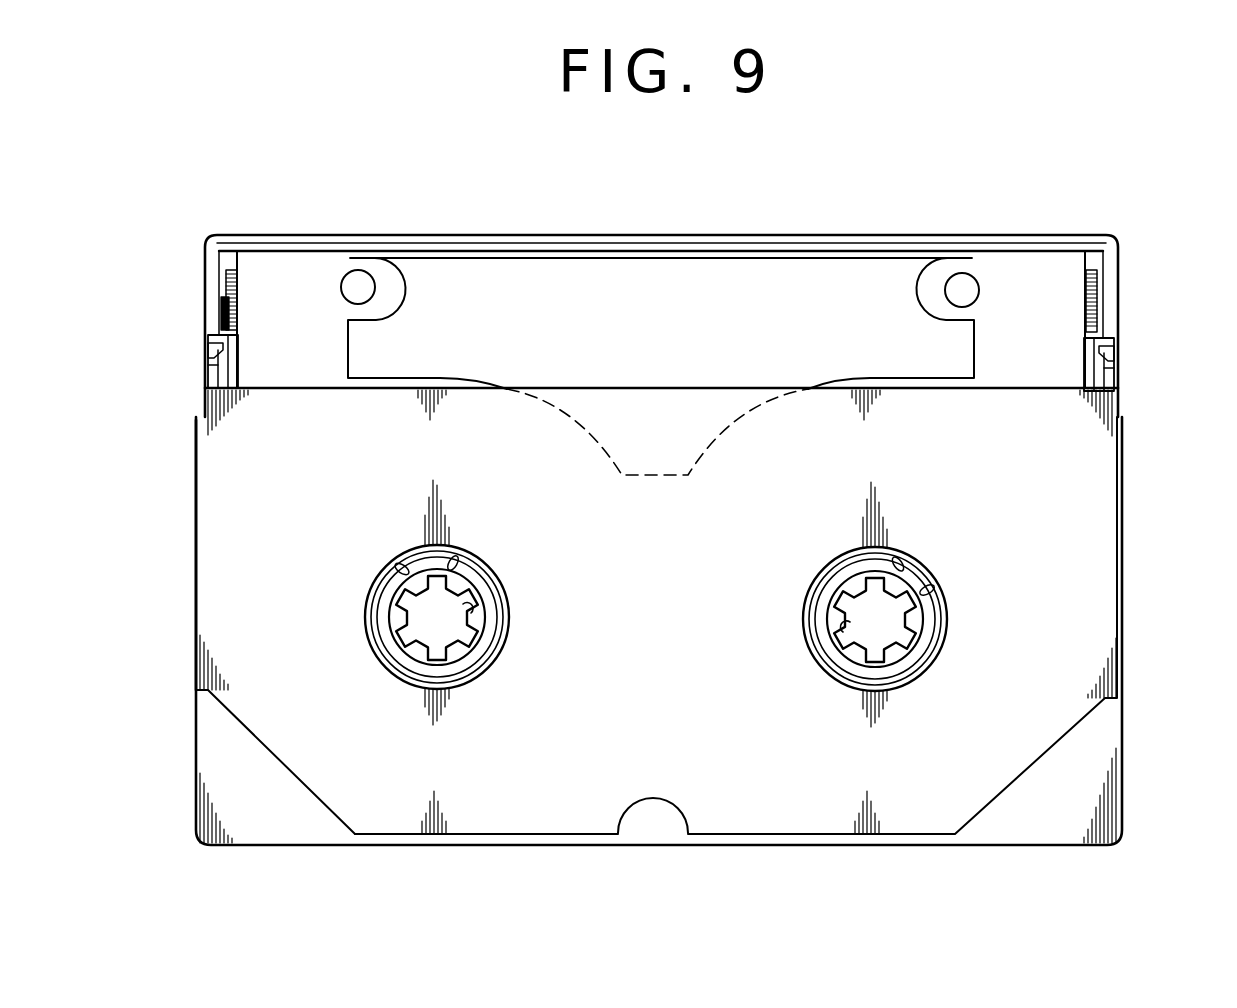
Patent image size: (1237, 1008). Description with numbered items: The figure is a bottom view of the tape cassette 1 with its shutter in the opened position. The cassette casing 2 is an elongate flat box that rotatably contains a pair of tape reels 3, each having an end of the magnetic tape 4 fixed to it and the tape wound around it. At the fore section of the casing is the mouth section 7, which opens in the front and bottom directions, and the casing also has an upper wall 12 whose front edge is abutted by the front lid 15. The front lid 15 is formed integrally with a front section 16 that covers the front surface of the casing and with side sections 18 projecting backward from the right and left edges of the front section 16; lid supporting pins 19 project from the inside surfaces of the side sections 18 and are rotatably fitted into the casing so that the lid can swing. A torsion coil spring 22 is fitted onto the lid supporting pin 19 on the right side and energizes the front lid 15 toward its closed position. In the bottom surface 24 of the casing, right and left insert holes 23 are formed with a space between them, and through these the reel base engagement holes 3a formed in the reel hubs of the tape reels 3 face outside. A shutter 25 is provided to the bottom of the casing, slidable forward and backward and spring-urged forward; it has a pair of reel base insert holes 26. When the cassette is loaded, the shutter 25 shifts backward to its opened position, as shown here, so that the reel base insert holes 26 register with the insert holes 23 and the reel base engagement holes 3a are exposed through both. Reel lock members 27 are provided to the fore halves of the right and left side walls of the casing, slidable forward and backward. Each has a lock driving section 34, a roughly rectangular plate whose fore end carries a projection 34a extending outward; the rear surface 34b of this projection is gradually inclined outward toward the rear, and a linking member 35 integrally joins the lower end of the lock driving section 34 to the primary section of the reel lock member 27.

The tape cassette 1 is at (1045, 212).
The cassette casing 2 is at (1122, 768).
The tape reel 3 is at (480, 580).
The reel base engagement hole 3a is at (470, 605).
The magnetic tape 4 is at (693, 260).
The mouth section 7 is at (725, 355).
The upper wall 12 is at (628, 322).
The front lid 15 is at (527, 236).
The front section 16 is at (590, 242).
The side section 18 is at (210, 264).
The lid supporting pin 19 is at (222, 310).
The torsion coil spring 22 is at (221, 327).
The insert hole 23 is at (456, 560).
The bottom surface 24 is at (215, 719).
The shutter 25 is at (232, 549).
The reel base insert hole 26 is at (394, 571).
The reel lock member 27 is at (228, 357).
The lock driving section 34 is at (221, 333).
The projection 34a is at (208, 345).
The rear surface 34b is at (218, 348).
The linking member 35 is at (218, 378).